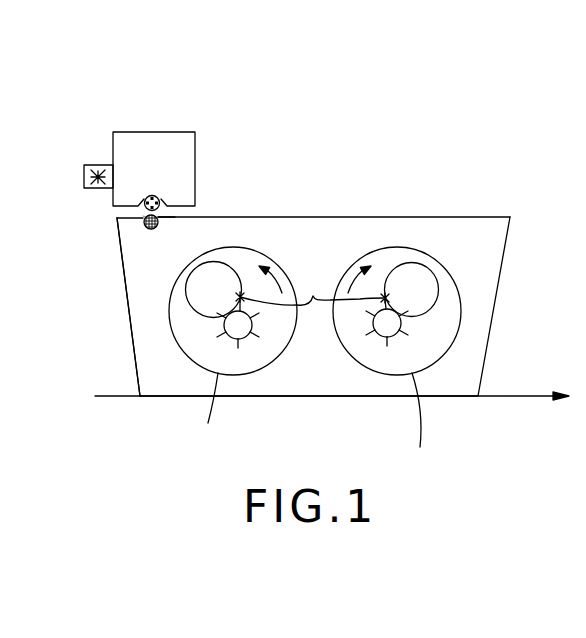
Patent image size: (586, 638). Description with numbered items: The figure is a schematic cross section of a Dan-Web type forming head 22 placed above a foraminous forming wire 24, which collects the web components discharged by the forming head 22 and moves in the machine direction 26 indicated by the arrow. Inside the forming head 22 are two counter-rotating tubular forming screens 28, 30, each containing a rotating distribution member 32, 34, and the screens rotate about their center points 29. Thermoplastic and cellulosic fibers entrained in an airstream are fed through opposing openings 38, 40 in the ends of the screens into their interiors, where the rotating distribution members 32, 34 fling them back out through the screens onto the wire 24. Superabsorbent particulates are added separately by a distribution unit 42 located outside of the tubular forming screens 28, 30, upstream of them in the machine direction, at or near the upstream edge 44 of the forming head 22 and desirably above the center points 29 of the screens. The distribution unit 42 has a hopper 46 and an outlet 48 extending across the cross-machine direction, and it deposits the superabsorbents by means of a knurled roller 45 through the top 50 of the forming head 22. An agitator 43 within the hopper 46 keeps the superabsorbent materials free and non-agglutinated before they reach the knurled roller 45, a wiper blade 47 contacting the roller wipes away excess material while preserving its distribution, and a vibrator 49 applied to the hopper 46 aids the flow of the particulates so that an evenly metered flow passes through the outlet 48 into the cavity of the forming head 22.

The forming head 22 is at (503, 257).
The foraminous forming wire 24 is at (447, 396).
The machine direction 26 is at (530, 396).
The tubular forming screen 28 is at (429, 256).
The center points 29 is at (313, 296).
The tubular forming screen 30 is at (282, 266).
The rotating distribution member 32 is at (244, 334).
The rotating distribution member 34 is at (390, 336).
The opening 38 is at (228, 276).
The opening 40 is at (423, 287).
The distribution unit 42 is at (195, 146).
The agitator 43 is at (160, 196).
The upstream edge 44 is at (127, 297).
The knurled roller 45 is at (160, 230).
The hopper 46 is at (172, 146).
The wiper blade 47 is at (148, 229).
The outlet 48 is at (144, 216).
The vibrator 49 is at (91, 165).
The top of the forming head 50 is at (397, 217).